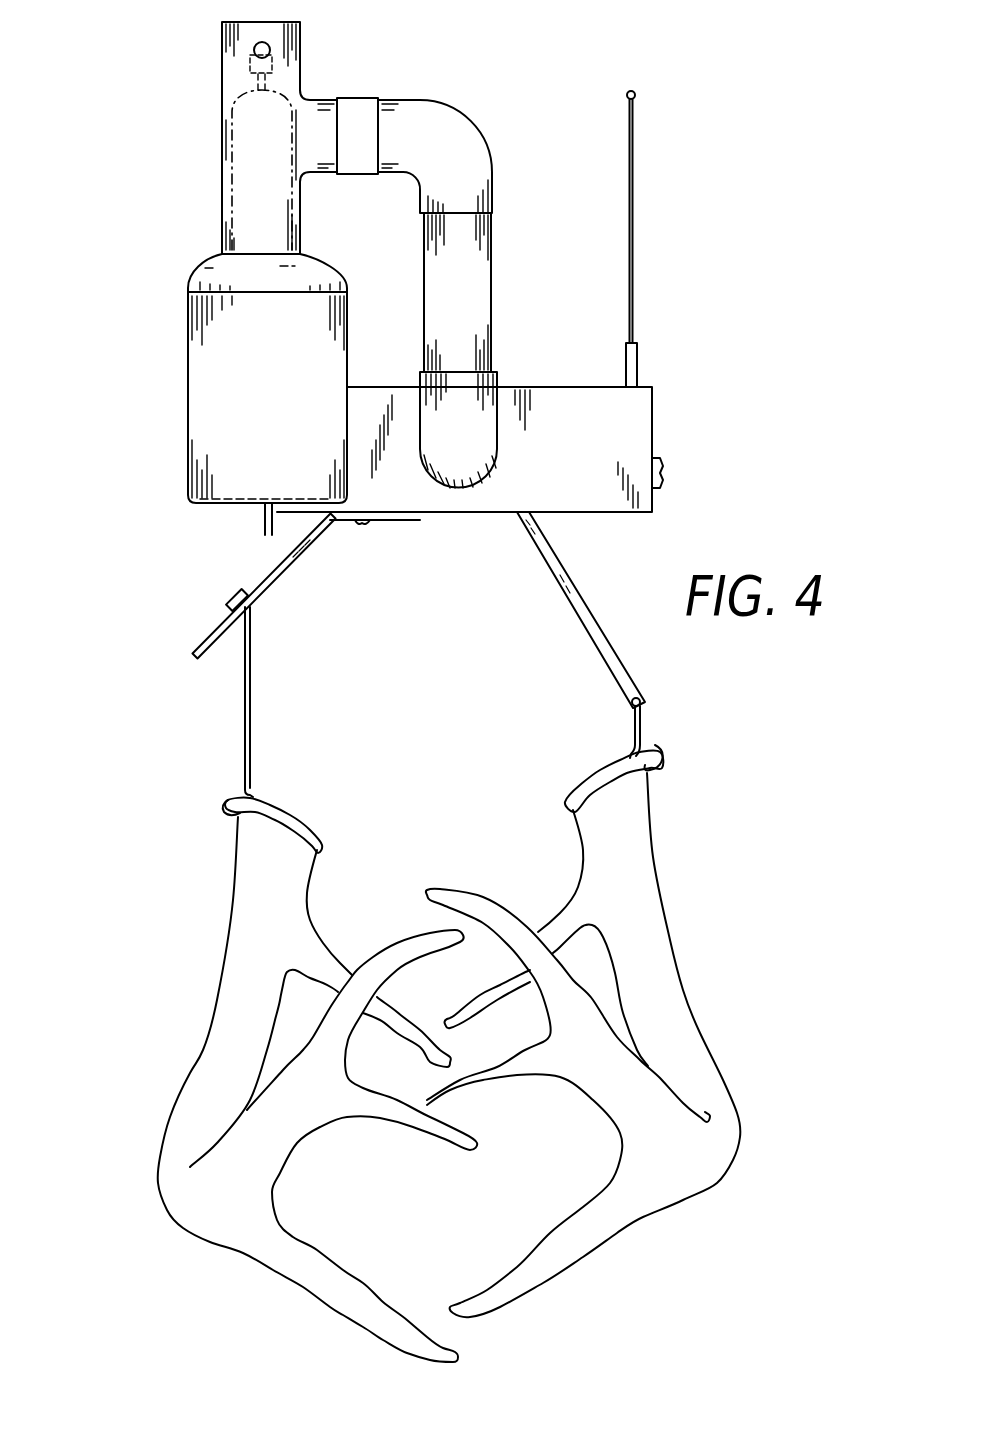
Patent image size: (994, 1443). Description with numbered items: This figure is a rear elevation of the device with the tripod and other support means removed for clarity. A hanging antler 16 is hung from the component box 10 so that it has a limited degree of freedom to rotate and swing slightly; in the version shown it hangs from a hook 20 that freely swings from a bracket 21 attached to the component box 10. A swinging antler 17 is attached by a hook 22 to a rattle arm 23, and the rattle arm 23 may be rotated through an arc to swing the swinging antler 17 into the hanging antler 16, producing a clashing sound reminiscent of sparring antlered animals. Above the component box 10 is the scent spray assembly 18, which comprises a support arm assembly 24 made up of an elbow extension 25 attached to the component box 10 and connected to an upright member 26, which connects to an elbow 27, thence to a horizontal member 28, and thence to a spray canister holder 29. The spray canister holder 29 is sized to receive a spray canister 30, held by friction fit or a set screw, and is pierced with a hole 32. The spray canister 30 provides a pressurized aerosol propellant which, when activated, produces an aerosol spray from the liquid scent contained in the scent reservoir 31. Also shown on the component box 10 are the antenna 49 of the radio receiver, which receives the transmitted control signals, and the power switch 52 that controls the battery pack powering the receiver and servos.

The component box 10 is at (653, 430).
The hanging antler 16 is at (232, 927).
The swinging antler 17 is at (660, 883).
The scent spray assembly 18 is at (163, 259).
The hook 20 is at (250, 727).
The bracket 21 is at (296, 556).
The hook 22 is at (634, 730).
The rattle arm 23 is at (540, 560).
The support arm assembly 24 is at (526, 126).
The elbow extension 25 is at (500, 372).
The upright member 26 is at (492, 272).
The elbow 27 is at (475, 122).
The horizontal member 28 is at (357, 98).
The spray canister holder 29 is at (222, 130).
The spray canister 30 is at (233, 203).
The scent reservoir 31 is at (188, 346).
The hole 32 is at (253, 55).
The antenna 49 is at (633, 163).
The power switch 52 is at (663, 483).